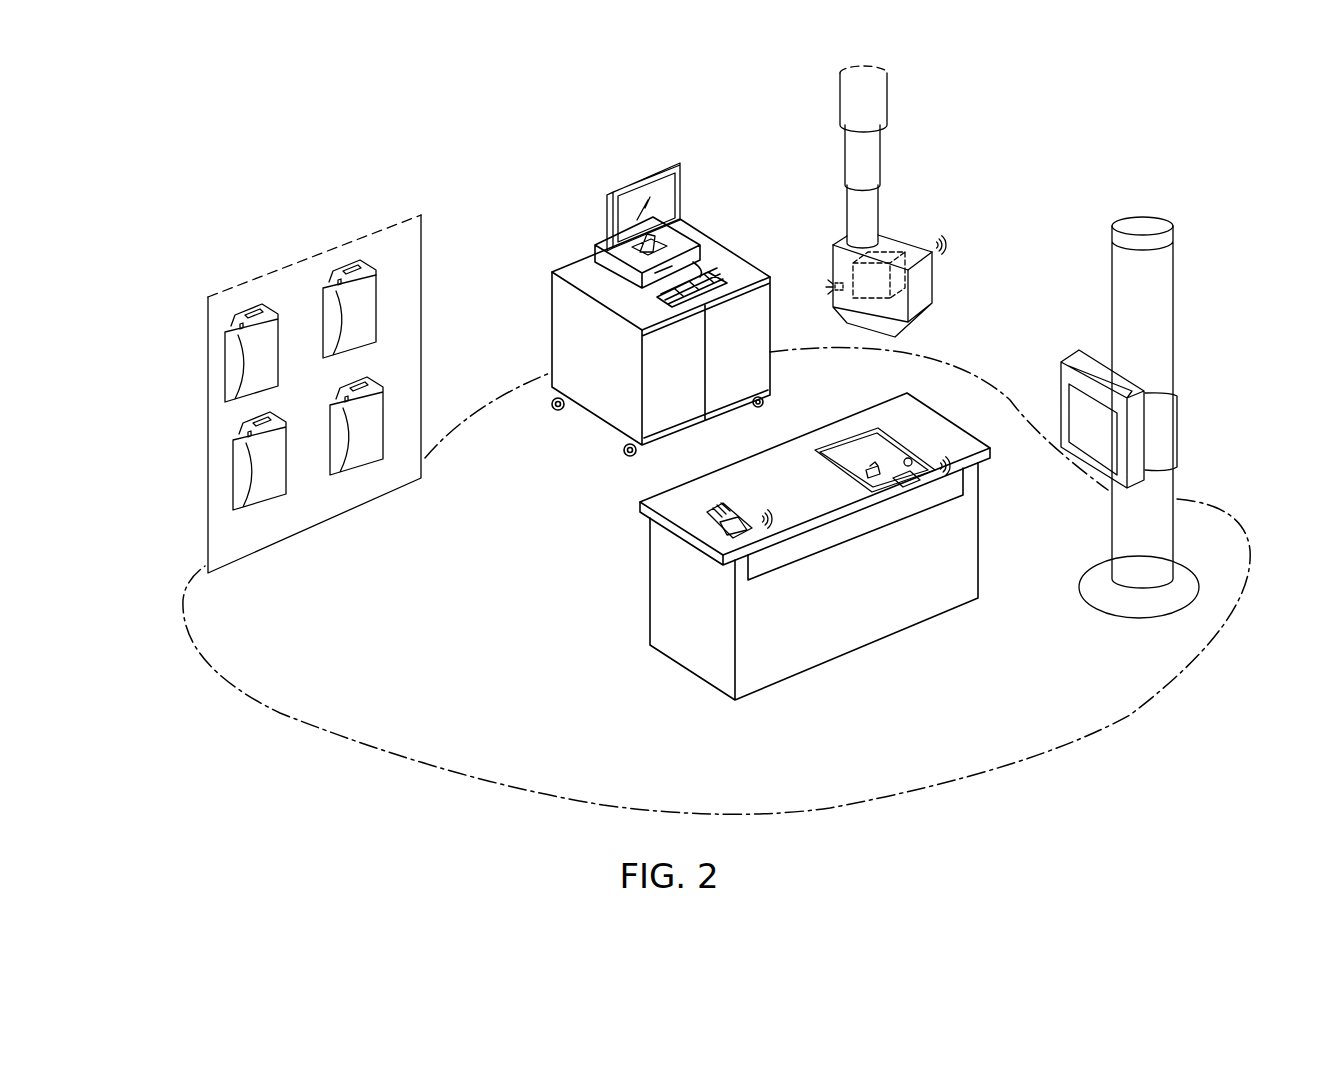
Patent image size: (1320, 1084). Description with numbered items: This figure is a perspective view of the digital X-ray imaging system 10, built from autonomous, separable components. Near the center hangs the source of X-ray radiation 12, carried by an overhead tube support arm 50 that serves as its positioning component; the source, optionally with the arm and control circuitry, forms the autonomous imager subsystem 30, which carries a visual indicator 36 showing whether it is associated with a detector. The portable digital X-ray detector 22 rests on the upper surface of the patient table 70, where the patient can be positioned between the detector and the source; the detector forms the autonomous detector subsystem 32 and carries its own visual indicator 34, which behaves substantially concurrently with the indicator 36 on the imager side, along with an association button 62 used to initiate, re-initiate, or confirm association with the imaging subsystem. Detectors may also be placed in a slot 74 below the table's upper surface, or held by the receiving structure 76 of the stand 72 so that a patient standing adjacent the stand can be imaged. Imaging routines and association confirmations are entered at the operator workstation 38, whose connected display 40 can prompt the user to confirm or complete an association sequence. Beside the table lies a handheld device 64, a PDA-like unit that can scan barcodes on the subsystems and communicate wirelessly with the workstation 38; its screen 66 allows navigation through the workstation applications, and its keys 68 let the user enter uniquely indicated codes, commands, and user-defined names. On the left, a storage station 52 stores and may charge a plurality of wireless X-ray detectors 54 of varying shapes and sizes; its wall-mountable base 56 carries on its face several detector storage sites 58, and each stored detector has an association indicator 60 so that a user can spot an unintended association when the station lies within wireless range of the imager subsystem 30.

The imaging system 10 is at (1065, 132).
The source of X-ray radiation 12 is at (895, 250).
The portable digital X-ray detector 22 is at (845, 462).
The imager subsystem 30 is at (901, 201).
The detector subsystem 32 is at (847, 432).
The visual indicator 34 is at (863, 475).
The visual indicator 36 is at (836, 285).
The operator workstation 38 is at (703, 235).
The display 40 is at (647, 178).
The overhead tube support arm 50 is at (887, 108).
The storage station 52 is at (357, 359).
The wireless X-ray detectors 54 is at (318, 370).
The wall-mountable base 56 is at (412, 314).
The wireless X-ray detector storage sites 58 is at (367, 331).
The association indicators 60 is at (365, 257).
The association button 62 is at (910, 458).
The handheld device 64 is at (725, 531).
The screen 66 is at (753, 528).
The keys 68 is at (713, 530).
The patient table 70 is at (839, 526).
The stand 72 is at (1117, 417).
The slot 74 is at (847, 527).
The receiving structure 76 is at (1068, 360).